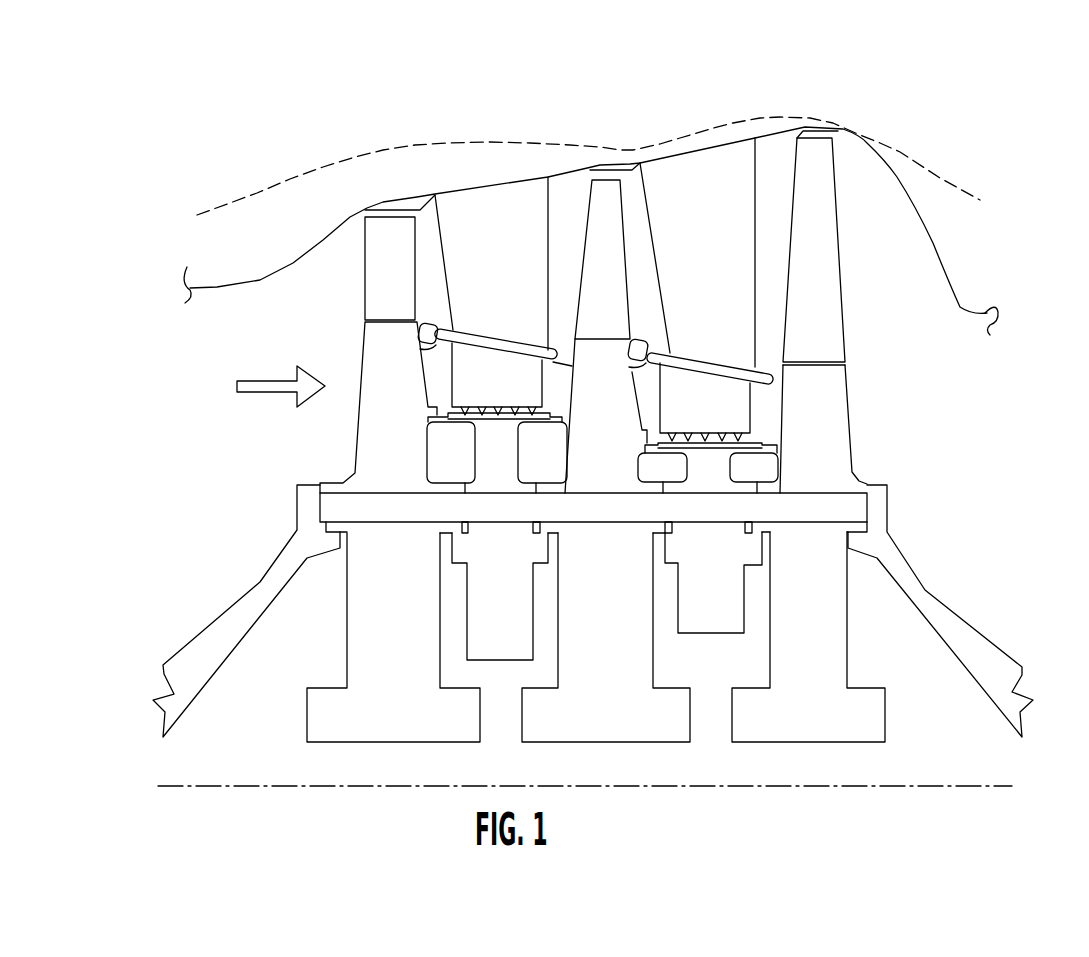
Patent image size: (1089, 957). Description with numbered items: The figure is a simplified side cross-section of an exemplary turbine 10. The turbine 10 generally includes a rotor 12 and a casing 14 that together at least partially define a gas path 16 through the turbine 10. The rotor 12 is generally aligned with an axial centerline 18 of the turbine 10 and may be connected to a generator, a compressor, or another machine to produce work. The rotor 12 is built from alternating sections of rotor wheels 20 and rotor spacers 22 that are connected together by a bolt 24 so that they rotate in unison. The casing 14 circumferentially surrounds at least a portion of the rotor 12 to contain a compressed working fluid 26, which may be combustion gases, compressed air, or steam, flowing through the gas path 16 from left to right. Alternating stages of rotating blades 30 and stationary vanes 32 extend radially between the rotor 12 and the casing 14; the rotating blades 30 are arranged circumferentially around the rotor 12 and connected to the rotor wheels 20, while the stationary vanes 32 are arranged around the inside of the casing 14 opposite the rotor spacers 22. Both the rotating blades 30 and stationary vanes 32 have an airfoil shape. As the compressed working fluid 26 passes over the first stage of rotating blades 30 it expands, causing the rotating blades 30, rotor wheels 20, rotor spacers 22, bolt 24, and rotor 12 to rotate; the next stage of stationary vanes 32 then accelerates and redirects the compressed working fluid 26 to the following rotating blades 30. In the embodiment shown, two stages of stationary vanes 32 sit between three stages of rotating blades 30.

The turbine 10 is at (310, 160).
The rotor 12 is at (770, 800).
The casing 14 is at (897, 177).
The gas path 16 is at (337, 340).
The axial centerline 18 is at (996, 787).
The rotor wheels 20 is at (406, 450).
The rotor spacers 22 is at (510, 463).
The bolt 24 is at (822, 493).
The compressed working fluid 26 is at (266, 386).
The rotating blades 30 is at (403, 252).
The stationary vanes 32 is at (516, 241).